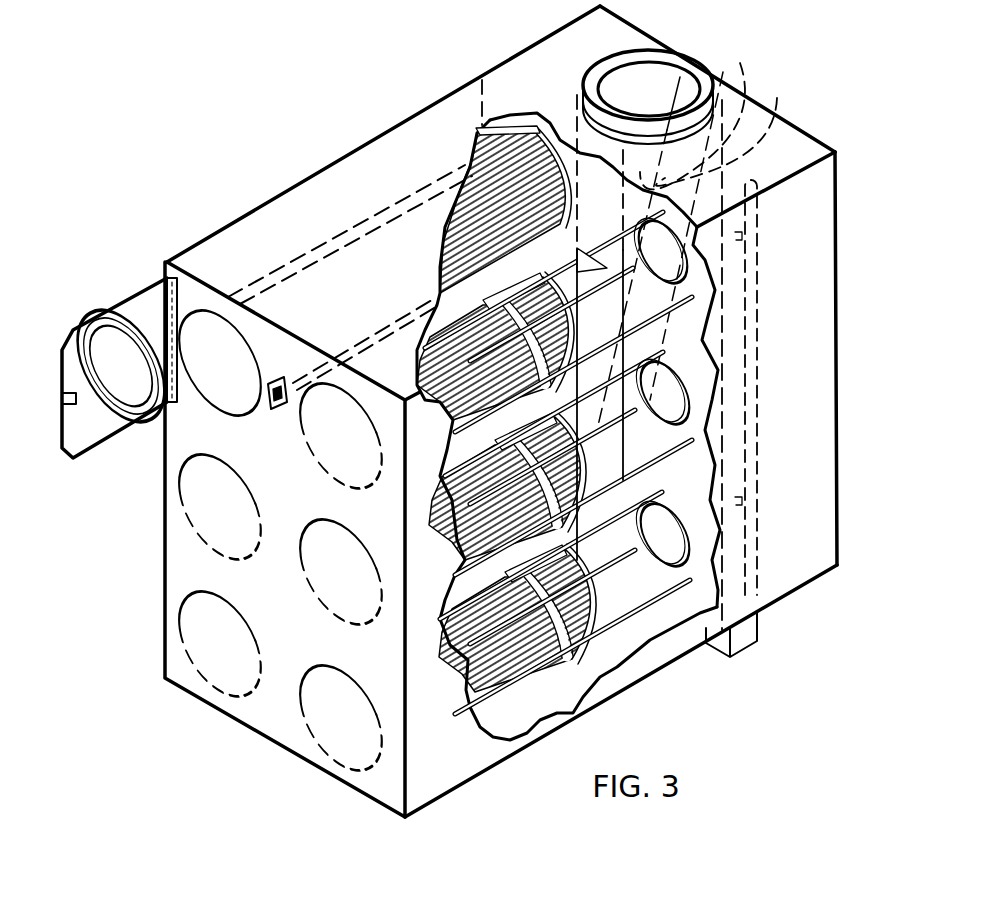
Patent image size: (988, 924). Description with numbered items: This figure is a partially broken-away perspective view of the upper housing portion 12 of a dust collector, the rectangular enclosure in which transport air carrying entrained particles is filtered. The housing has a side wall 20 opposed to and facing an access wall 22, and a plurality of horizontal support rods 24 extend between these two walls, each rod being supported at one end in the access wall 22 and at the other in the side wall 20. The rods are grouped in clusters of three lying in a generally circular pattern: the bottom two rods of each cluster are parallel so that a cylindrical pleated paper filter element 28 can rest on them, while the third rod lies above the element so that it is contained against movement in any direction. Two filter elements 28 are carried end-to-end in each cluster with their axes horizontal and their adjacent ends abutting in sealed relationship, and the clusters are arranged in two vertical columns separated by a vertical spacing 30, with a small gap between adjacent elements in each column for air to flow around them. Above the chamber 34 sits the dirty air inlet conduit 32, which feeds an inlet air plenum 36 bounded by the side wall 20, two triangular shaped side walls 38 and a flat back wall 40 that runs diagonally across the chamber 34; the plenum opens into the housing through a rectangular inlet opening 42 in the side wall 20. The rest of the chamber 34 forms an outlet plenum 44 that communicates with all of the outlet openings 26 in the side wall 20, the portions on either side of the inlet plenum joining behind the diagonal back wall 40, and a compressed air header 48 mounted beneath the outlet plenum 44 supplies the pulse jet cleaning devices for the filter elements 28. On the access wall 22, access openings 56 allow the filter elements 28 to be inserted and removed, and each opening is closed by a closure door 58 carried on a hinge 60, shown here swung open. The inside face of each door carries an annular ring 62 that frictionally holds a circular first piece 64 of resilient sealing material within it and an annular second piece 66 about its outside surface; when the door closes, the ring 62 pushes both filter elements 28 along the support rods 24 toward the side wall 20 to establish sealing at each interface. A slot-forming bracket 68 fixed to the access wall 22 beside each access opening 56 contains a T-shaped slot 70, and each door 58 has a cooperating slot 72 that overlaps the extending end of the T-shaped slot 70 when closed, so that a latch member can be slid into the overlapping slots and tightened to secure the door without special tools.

The upper housing portion 12 is at (382, 124).
The side wall 20 is at (757, 613).
The access wall 22 is at (386, 786).
The support rods 24 is at (655, 335).
The outlet openings 26 is at (660, 545).
The filter element 28 is at (493, 178).
The vertical spacing 30 is at (433, 300).
The dirty air inlet conduit 32 is at (628, 55).
The chamber 34 is at (836, 150).
The inlet air plenum 36 is at (726, 78).
The triangular shaped side walls 38 is at (815, 124).
The flat back wall 40 is at (760, 108).
The rectangular inlet opening 42 is at (640, 300).
The outlet plenum 44 is at (808, 366).
The compressed air header 48 is at (742, 652).
The access openings 56 is at (207, 330).
The closure door 58 is at (118, 302).
The hinge 60 is at (166, 276).
The annular ring 62 is at (104, 404).
The first piece of resilient sealing material 64 is at (121, 382).
The second piece of resilient sealing material 66 is at (89, 412).
The slot-forming bracket 68 is at (285, 406).
The T-shaped slot 70 is at (274, 408).
The cooperating slot 72 is at (60, 397).